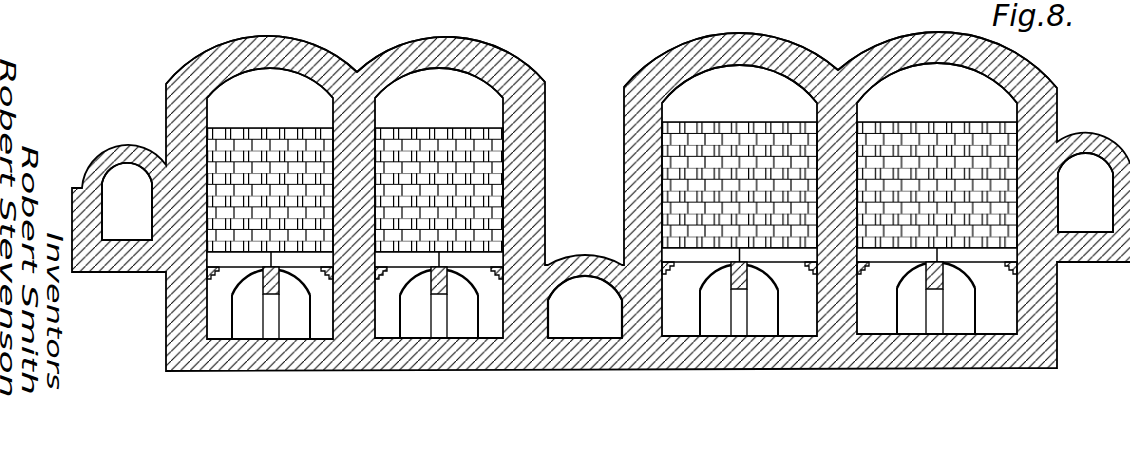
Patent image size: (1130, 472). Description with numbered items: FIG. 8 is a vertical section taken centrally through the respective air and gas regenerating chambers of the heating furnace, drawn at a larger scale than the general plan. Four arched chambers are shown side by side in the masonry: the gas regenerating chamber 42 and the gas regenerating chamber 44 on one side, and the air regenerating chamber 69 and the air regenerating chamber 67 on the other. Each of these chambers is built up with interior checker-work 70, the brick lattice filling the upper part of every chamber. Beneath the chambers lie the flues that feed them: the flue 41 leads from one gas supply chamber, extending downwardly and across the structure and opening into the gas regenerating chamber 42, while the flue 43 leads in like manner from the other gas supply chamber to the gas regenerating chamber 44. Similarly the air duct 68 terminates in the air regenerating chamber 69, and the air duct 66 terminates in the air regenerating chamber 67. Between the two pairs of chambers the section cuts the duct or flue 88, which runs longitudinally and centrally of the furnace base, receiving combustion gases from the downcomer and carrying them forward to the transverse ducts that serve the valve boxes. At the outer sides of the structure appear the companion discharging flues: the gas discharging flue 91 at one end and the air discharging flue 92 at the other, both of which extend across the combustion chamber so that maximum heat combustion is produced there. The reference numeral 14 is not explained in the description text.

The furnace base wall 14 is at (555, 358).
The gas regenerating chamber 42 is at (251, 78).
The gas regenerating chamber 44 is at (431, 78).
The air regenerating chamber 69 is at (707, 75).
The air regenerating chamber 67 is at (912, 73).
The checker-work 70 is at (258, 127).
The flue 41 is at (242, 316).
The flue 43 is at (418, 330).
The air duct 68 is at (720, 328).
The air duct 66 is at (918, 323).
The gas discharging flue 91 is at (127, 201).
The air discharging flue 92 is at (1085, 192).
The duct or flue 88 is at (585, 307).